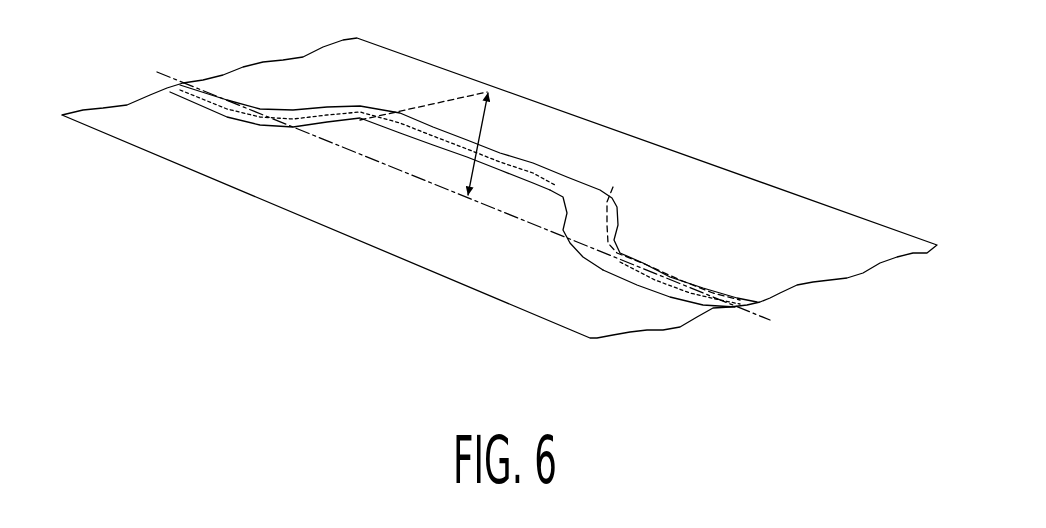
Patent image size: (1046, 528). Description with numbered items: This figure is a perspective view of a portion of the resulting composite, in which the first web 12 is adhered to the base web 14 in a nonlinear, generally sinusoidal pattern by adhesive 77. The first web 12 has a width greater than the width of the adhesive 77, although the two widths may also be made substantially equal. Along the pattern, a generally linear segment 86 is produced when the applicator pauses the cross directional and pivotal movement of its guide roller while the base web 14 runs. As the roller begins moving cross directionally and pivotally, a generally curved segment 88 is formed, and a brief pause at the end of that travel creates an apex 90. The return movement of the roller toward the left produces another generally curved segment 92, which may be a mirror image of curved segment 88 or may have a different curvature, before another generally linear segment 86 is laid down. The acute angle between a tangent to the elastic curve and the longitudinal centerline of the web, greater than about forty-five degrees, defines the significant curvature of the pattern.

The first web 12 is at (468, 183).
The base web 14 is at (499, 188).
The adhesive 77 is at (673, 196).
The generally linear segment 86 is at (441, 234).
The generally curved segment 88 is at (360, 174).
The apex 90 is at (463, 196).
The generally curved segment 92 is at (470, 274).